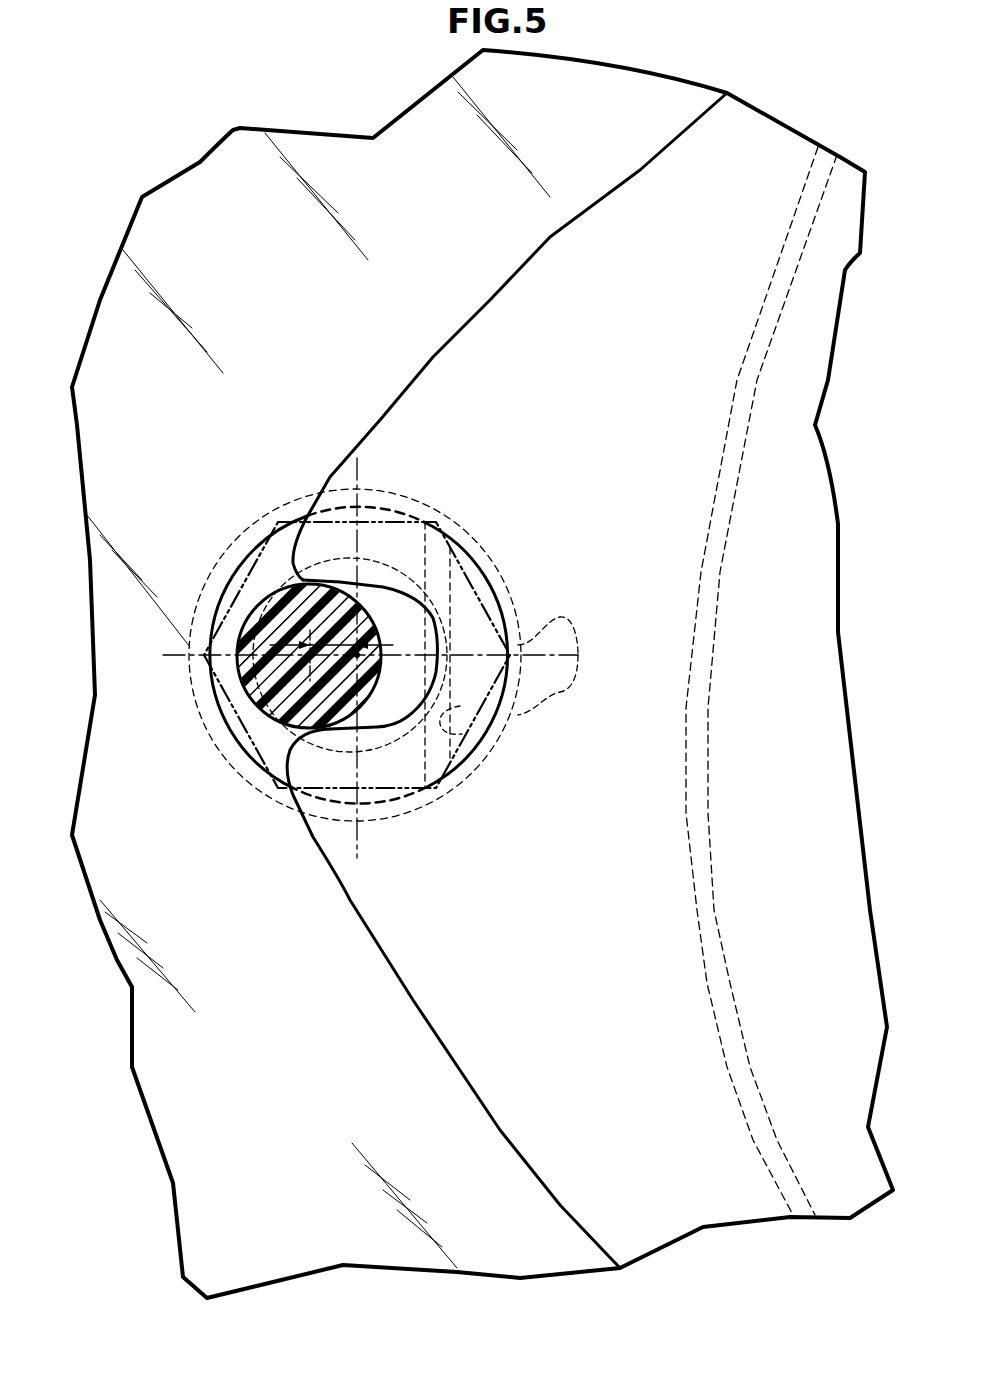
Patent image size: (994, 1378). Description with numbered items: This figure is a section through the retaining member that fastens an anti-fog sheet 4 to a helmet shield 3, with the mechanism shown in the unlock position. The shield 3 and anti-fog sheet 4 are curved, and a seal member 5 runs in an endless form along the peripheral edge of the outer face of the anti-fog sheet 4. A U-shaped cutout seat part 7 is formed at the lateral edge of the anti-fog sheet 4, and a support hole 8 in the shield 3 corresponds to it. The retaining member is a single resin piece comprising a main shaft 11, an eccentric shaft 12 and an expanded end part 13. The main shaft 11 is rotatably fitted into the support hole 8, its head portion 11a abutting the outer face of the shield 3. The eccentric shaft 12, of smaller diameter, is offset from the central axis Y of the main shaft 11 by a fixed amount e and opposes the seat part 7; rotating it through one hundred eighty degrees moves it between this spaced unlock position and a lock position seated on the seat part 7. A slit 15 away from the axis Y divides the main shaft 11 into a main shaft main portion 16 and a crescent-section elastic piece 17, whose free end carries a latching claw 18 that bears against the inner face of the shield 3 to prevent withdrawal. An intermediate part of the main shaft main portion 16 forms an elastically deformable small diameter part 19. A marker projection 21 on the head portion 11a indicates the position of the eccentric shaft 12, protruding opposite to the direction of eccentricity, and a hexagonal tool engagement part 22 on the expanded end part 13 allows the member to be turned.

The shield 3 is at (195, 198).
The anti-fog sheet 4 is at (430, 380).
The seal member 5 is at (727, 475).
The seat part 7 is at (437, 645).
The support hole 8 is at (403, 520).
The main shaft 11 is at (386, 639).
The head portion 11a is at (287, 503).
The eccentric shaft 12 is at (316, 704).
The expanded end part 13 is at (372, 523).
The slit 15 is at (455, 737).
The main shaft main portion 16 is at (417, 510).
The elastic piece 17 is at (384, 652).
The latching claw 18 is at (545, 630).
The small diameter part 19 is at (335, 750).
The marker projection 21 is at (578, 660).
The tool engagement part 22 is at (370, 539).
The central axis of main shaft Y is at (360, 658).
The amount of eccentricity e is at (325, 643).